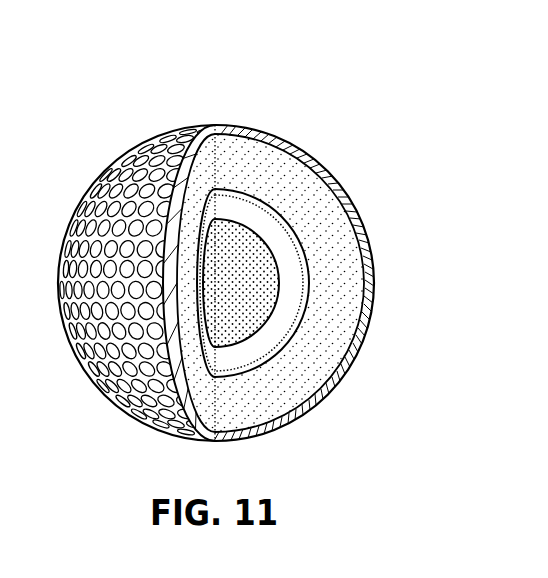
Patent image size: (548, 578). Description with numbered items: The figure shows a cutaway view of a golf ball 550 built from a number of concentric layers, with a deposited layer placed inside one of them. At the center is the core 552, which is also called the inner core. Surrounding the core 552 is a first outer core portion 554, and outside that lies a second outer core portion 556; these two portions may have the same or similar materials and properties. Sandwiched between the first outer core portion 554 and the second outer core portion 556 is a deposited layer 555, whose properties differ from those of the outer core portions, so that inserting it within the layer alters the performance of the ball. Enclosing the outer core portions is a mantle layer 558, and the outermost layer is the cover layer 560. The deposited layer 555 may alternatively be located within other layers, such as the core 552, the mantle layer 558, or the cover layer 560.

The golf ball 550 is at (124, 103).
The core 552 is at (245, 328).
The first outer core portion 554 is at (280, 325).
The deposited layer 555 is at (307, 250).
The second outer core portion 556 is at (292, 178).
The mantle layer 558 is at (341, 209).
The cover layer 560 is at (260, 133).